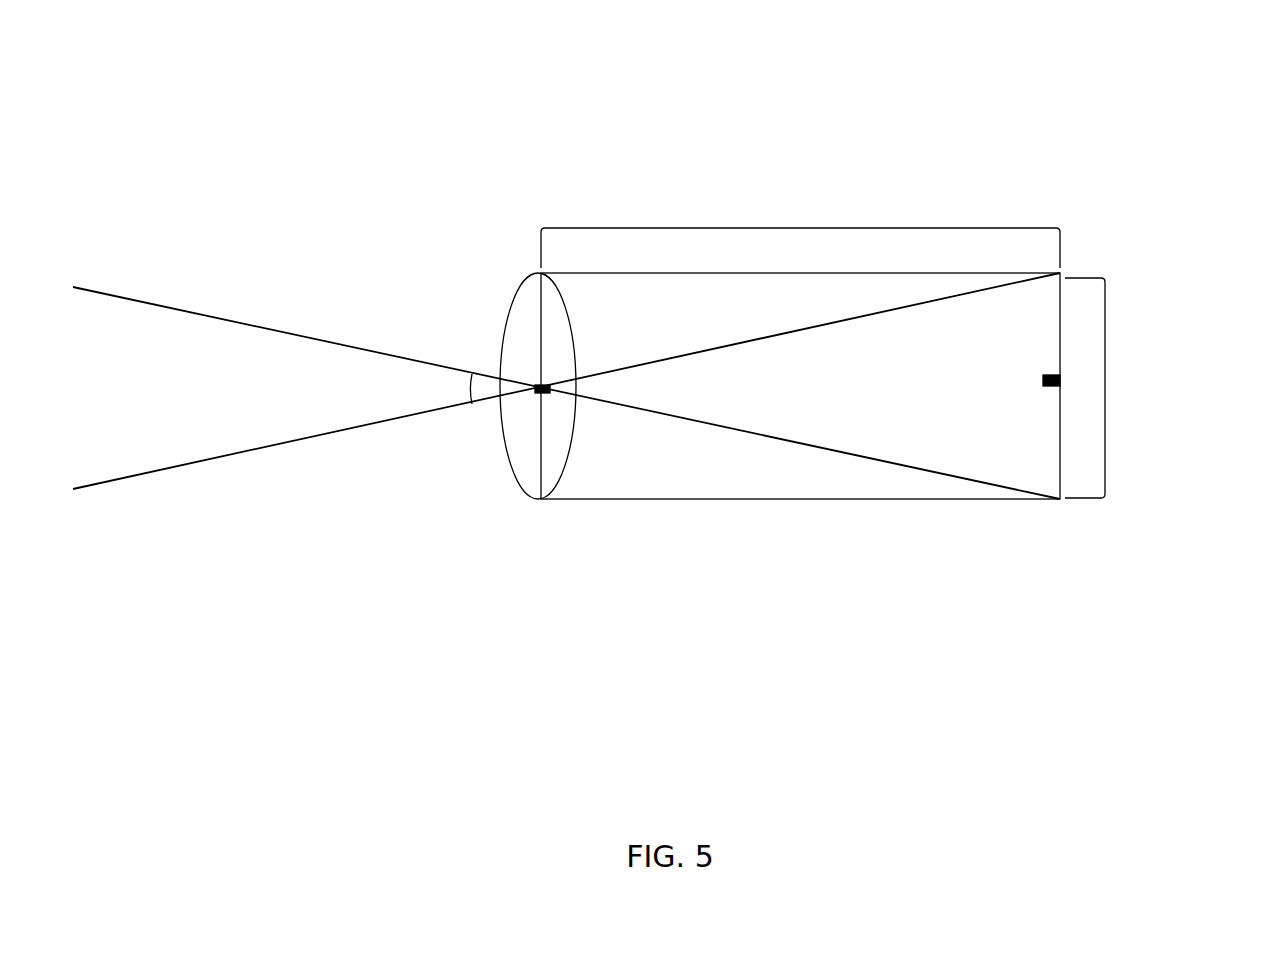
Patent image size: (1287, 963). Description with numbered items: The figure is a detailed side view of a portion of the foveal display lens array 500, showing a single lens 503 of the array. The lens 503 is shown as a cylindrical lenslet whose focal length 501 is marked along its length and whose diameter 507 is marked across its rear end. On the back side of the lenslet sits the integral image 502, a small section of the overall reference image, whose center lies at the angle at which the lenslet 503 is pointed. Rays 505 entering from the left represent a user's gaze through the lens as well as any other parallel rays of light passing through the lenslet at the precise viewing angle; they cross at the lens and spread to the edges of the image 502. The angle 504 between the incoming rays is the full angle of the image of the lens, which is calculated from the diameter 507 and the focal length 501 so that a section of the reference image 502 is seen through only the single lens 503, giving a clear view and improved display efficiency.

The optical system 500 is at (392, 91).
The focal length 501 is at (785, 228).
The integral image 502 is at (1060, 380).
The lens 503 is at (538, 538).
The angle of the viewer's gaze 504 is at (435, 386).
The user's gaze 505 is at (185, 302).
The diameter of the lens 507 is at (1105, 312).